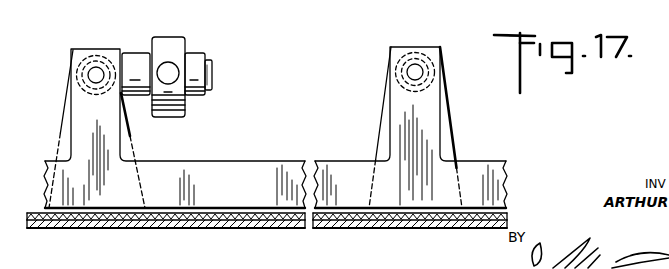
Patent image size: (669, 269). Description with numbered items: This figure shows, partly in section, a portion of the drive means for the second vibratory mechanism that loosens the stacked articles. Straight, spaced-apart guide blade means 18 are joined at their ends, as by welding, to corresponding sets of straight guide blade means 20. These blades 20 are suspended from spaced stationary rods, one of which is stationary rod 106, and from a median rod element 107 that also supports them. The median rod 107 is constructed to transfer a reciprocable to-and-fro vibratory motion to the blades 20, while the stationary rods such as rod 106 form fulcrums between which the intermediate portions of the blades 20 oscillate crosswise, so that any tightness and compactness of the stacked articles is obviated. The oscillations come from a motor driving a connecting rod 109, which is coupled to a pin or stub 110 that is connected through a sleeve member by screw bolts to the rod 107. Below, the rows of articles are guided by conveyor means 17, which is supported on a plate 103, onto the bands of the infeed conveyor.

The conveyor means 17 is at (217, 212).
The guide blade means 18 is at (268, 4).
The guide blade means 20 is at (323, 160).
The plate 103 is at (207, 221).
The stationary rod 106 is at (407, 72).
The median rod element 107 is at (97, 72).
The connecting rod 109 is at (168, 72).
The pin or stub 110 is at (213, 72).